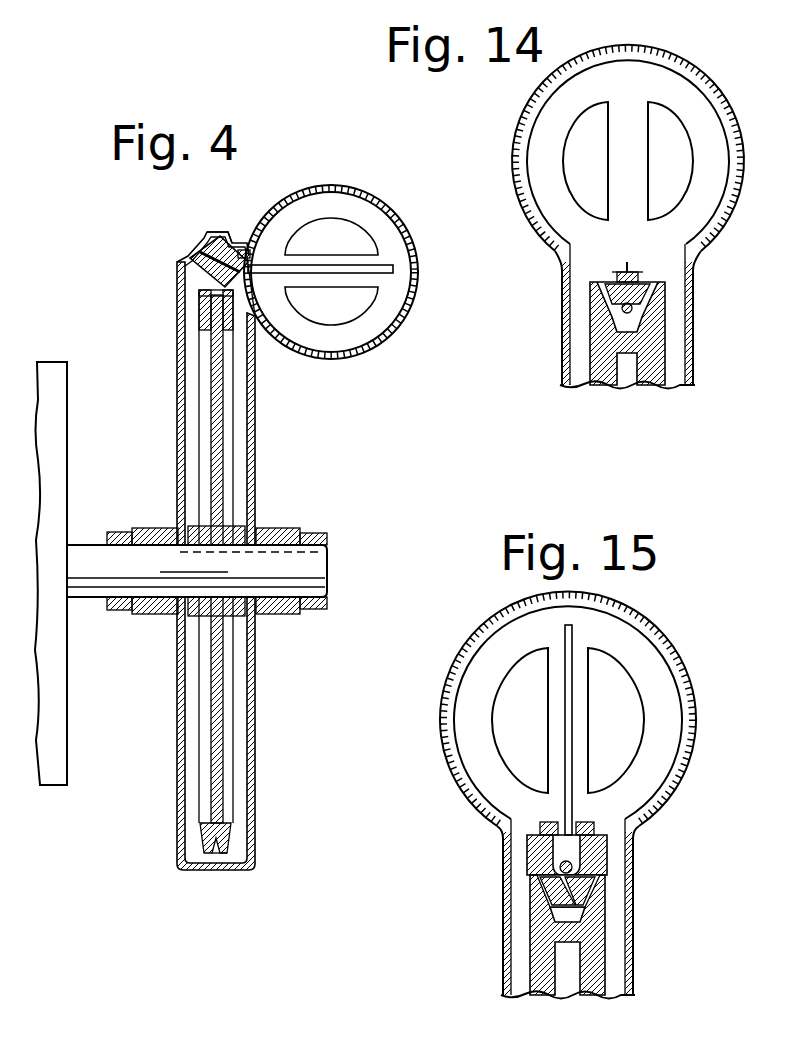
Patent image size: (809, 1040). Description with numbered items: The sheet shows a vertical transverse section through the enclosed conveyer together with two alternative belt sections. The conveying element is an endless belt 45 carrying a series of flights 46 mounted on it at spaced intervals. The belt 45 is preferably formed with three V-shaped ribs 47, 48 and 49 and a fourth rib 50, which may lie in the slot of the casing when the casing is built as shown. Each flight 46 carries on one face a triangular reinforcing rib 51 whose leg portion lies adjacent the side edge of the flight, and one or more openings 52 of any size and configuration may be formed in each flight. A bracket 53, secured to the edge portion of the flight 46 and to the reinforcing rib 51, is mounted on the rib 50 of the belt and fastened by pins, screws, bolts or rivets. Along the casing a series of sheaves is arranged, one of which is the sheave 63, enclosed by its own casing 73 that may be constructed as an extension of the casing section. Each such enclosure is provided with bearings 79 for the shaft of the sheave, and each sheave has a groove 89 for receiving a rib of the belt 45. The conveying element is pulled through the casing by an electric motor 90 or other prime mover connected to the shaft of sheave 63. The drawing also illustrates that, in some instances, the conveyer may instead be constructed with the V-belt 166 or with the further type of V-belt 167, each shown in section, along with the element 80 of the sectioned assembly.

In FIG. 4, the endless belt 45 is at (213, 262).
In FIG. 4, the flight 46 is at (387, 228).
In FIG. 4, the V-shaped rib 47 is at (222, 240).
In FIG. 4, the V-shaped rib 48 is at (190, 262).
In FIG. 4, the V-shaped rib 49 is at (212, 295).
In FIG. 4, the fourth rib 50 is at (246, 262).
In FIG. 4, the reinforcing rib 51 is at (383, 273).
In FIG. 4, the opening 52 is at (331, 271).
In FIG. 4, the bracket 53 is at (248, 282).
In FIG. 4, the sheave 63 is at (217, 743).
In FIG. 4, the casing 73 is at (255, 788).
In FIG. 4, the bearing 79 is at (147, 533).
In FIG. 4, the shaft 80 is at (315, 565).
In FIG. 4, the groove 89 is at (214, 838).
In FIG. 4, the electric motor 90 is at (55, 415).
In FIG. 14, the V-belt 166 is at (650, 300).
In FIG. 15, the V-belt 167 is at (578, 893).